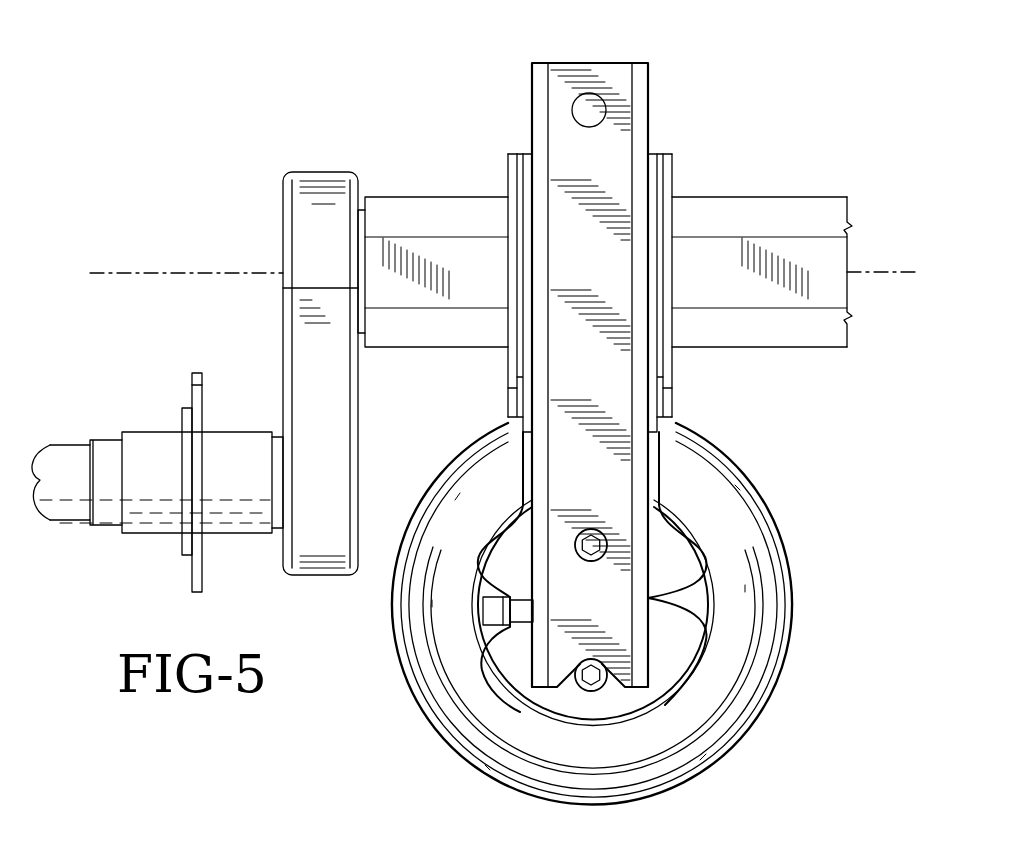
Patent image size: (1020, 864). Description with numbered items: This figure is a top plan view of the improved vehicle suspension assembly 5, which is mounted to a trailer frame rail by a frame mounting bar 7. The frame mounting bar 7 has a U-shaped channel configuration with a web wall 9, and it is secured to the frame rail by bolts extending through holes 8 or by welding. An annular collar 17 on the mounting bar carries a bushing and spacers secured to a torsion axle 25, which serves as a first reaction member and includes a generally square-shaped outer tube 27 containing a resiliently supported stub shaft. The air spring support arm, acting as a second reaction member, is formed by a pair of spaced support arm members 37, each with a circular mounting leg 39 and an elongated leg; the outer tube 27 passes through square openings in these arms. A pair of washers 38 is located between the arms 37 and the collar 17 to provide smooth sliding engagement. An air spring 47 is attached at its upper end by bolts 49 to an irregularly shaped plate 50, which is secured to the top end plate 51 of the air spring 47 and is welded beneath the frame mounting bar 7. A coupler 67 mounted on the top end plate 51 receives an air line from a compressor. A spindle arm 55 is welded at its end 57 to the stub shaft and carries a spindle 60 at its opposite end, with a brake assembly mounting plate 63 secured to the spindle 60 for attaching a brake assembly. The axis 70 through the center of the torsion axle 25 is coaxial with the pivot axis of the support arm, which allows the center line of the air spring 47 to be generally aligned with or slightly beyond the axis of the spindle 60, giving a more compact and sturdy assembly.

The suspension assembly 5 is at (388, 86).
The frame mounting bar 7 is at (530, 82).
The holes 8 is at (589, 110).
The web wall 9 is at (615, 150).
The annular collar 17 is at (528, 152).
The torsion axle 25 is at (773, 190).
The outer tube 27 is at (813, 205).
The support arm members 37 is at (502, 366).
The washers 38 is at (520, 270).
The circular mounting leg 39 is at (507, 165).
The air spring 47 is at (705, 722).
The bolts 49 is at (574, 546).
The irregularly shaped plate 50 is at (515, 663).
The top end plate 51 is at (628, 725).
The spindle arm 55 is at (276, 308).
The spindle arm end 57 is at (318, 182).
The spindle 60 is at (138, 430).
The brake assembly mounting plate 63 is at (190, 395).
The coupler 67 is at (482, 608).
The axis 70 is at (900, 270).